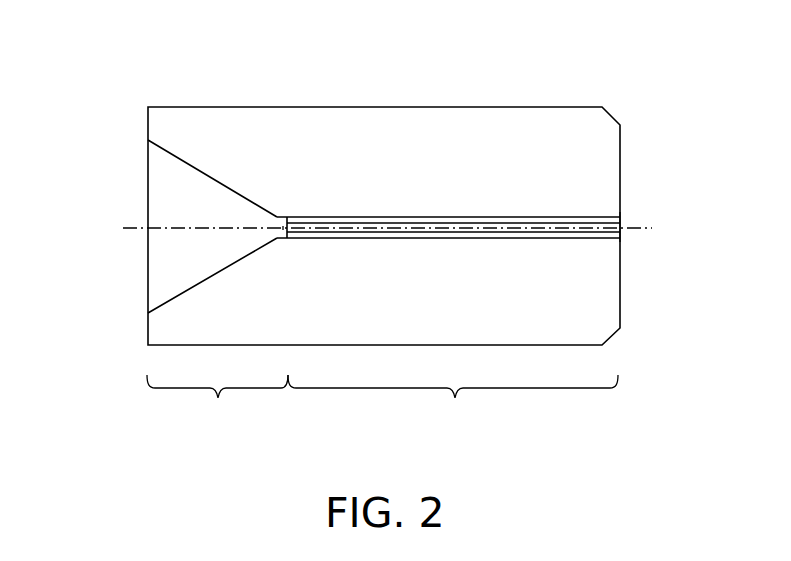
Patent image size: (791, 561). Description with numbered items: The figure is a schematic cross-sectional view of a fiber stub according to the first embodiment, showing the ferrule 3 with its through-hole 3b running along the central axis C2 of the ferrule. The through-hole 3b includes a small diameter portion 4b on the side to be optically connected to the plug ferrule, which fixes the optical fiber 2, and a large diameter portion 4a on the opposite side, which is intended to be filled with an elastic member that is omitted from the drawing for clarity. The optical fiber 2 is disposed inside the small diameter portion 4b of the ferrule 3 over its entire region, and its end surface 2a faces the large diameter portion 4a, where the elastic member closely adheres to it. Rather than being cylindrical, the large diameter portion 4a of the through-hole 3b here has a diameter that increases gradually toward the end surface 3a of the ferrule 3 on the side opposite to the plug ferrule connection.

The optical fiber 2 is at (483, 232).
The end surface of the optical fiber 2a is at (280, 229).
The ferrule 3 is at (357, 155).
The end surface of the fiber stub (ferrule) 3a is at (146, 126).
The through-hole 3b is at (626, 215).
The large diameter portion 4a is at (217, 404).
The small diameter portion 4b is at (453, 404).
The central axis of the ferrule C2 is at (639, 229).